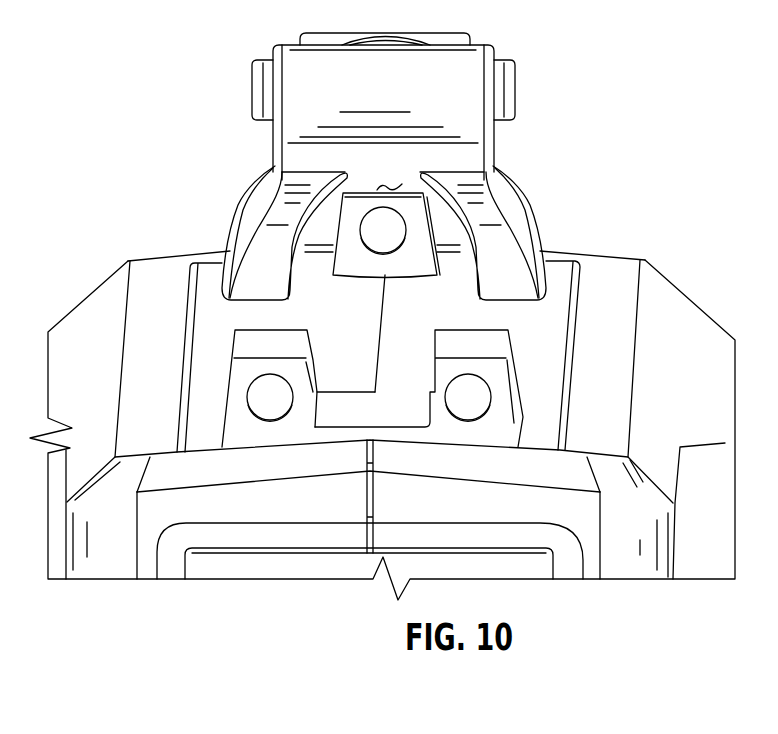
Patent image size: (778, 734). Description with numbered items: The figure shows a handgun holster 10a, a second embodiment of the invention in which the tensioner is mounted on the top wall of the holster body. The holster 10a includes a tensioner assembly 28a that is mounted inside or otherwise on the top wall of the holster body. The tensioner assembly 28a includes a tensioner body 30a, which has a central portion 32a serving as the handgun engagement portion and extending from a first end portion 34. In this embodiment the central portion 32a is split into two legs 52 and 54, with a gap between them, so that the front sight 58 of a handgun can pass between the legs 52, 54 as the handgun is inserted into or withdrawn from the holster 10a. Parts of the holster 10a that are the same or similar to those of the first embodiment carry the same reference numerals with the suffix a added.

The handgun holster 10a is at (221, 54).
The tensioner assembly 28a is at (253, 145).
The tensioner body 30a is at (513, 77).
The central portion 32a is at (233, 214).
The first end portion 34 is at (396, 182).
The leg 52 is at (250, 270).
The leg 54 is at (498, 256).
The front sight 58 is at (410, 215).